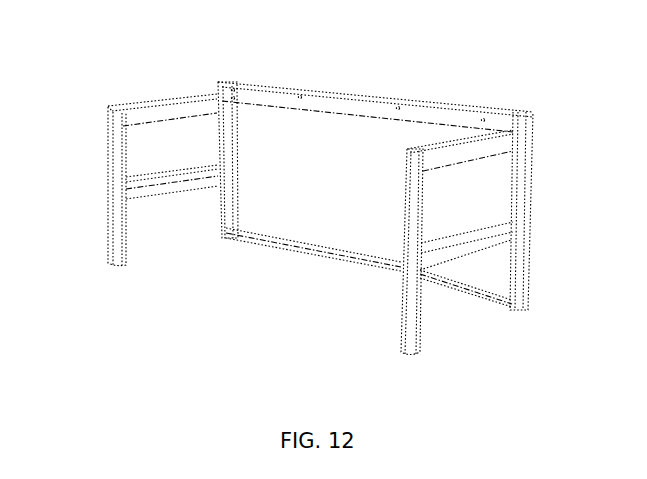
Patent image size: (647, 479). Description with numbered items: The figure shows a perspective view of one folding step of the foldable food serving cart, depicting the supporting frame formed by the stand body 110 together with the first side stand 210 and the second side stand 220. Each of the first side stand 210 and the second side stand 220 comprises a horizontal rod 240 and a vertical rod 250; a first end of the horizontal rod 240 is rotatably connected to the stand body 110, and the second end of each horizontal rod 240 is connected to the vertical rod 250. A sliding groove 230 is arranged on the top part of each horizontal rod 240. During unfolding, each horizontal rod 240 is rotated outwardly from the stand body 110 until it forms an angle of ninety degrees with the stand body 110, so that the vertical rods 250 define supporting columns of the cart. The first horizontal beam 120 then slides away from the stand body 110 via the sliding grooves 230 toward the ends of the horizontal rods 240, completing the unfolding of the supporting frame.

The stand body 110 is at (520, 180).
The first horizontal beam 120 is at (371, 113).
The first side stand 210 is at (118, 176).
The second side stand 220 is at (414, 280).
The sliding grooves 230 is at (178, 97).
The horizontal rod 240 is at (129, 75).
The vertical rod 250 is at (120, 163).